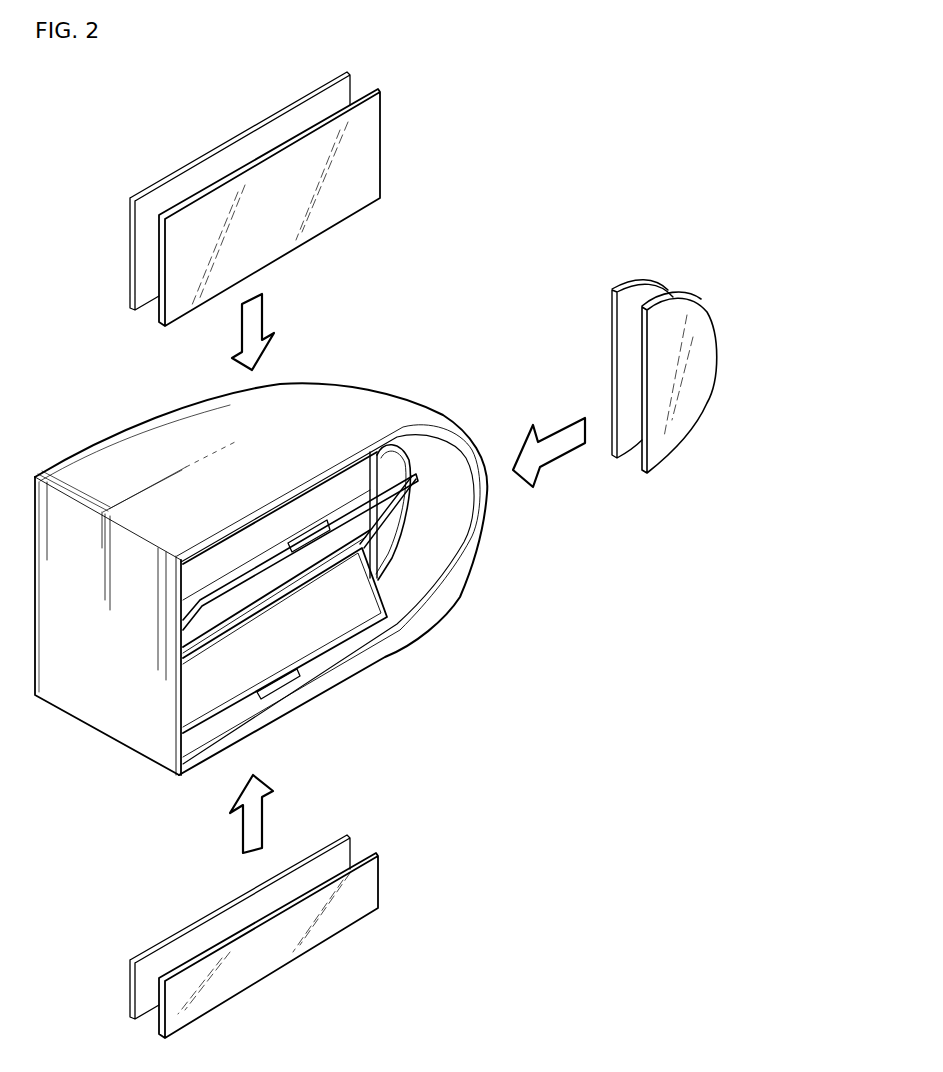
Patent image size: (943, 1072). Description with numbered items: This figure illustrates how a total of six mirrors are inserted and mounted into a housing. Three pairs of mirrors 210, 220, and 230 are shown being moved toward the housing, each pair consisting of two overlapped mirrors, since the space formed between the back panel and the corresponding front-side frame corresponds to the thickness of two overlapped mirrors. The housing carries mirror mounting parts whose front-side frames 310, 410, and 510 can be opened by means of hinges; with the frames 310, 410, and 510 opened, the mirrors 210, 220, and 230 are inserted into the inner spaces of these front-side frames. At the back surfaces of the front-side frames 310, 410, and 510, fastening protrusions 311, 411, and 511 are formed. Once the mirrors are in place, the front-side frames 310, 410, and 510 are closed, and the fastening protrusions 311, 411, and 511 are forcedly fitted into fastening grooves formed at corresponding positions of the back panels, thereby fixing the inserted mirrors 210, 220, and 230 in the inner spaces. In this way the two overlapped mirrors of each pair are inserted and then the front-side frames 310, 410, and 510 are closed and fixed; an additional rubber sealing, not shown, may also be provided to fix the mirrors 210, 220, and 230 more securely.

The mirror 210 is at (365, 163).
The mirror 220 is at (705, 365).
The mirror 230 is at (370, 887).
The front-side frame 310 is at (352, 566).
The fastening protrusion 311 is at (317, 530).
The front-side frame 410 is at (402, 545).
The fastening protrusion 411 is at (414, 496).
The front-side frame 510 is at (351, 633).
The fastening protrusion 511 is at (283, 683).